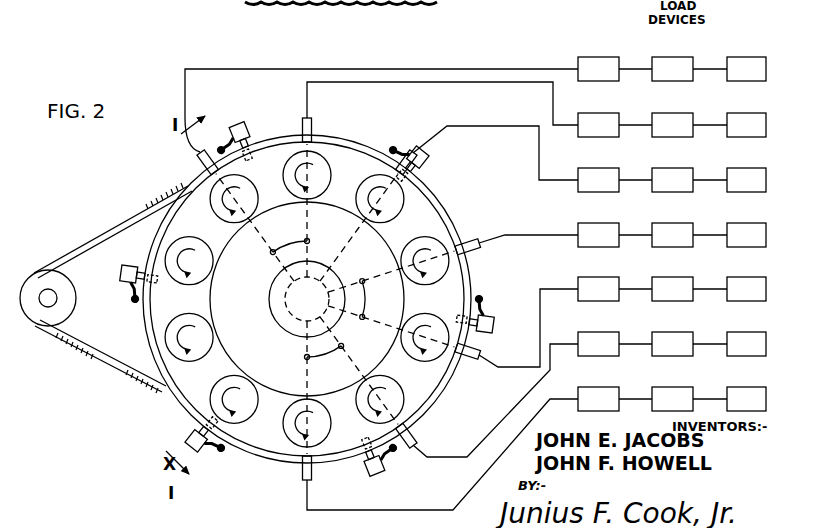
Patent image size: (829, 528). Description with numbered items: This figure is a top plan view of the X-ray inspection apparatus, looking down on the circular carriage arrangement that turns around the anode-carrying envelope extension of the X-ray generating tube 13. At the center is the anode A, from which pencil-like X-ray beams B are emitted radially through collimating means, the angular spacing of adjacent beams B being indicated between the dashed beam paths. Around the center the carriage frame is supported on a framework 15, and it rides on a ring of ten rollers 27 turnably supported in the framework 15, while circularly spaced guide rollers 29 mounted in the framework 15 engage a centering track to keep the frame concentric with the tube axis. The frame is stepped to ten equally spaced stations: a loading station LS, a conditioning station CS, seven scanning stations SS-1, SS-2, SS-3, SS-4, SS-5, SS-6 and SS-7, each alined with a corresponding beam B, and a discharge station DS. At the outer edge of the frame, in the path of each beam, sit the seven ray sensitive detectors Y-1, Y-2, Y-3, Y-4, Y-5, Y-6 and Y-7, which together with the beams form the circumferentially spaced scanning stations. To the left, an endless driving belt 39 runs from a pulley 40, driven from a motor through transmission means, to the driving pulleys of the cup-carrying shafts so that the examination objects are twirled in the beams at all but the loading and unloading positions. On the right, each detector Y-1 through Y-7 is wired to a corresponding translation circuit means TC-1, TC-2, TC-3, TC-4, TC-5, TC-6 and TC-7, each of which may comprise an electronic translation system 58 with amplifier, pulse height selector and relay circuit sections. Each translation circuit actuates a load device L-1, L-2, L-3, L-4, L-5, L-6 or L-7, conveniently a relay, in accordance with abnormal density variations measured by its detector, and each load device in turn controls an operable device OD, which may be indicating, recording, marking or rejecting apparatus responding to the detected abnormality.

The X-ray generating tube 13 is at (190, 3).
The framework 15 is at (240, 130).
The rollers 27 is at (254, 186).
The guide rollers 29 is at (220, 148).
The endless driving belt 39 is at (72, 339).
The pulley 40 is at (34, 308).
The electronic translation system 58 is at (606, 55).
The anode A is at (307, 299).
The X-ray beams B is at (329, 298).
The discharge station DS is at (170, 224).
The loading station LS is at (132, 357).
The conditioning station CS is at (198, 388).
The detector Y-1 is at (300, 478).
The detector Y-2 is at (413, 446).
The detector Y-3 is at (469, 360).
The detector Y-4 is at (482, 247).
The detector Y-5 is at (421, 165).
The detector Y-6 is at (307, 120).
The detector Y-7 is at (207, 165).
The scanning station SS-1 is at (325, 450).
The scanning station SS-2 is at (409, 404).
The scanning station SS-3 is at (445, 361).
The scanning station SS-4 is at (442, 228).
The scanning station SS-5 is at (370, 173).
The scanning station SS-6 is at (331, 155).
The scanning station SS-7 is at (206, 189).
The translation circuit means TC-1 is at (479, 448).
The translation circuit means TC-2 is at (532, 394).
The translation circuit means TC-3 is at (565, 322).
The translation circuit means TC-4 is at (565, 235).
The translation circuit means TC-5 is at (532, 159).
The translation circuit means TC-6 is at (479, 109).
The translation circuit means TC-7 is at (418, 104).
The load device L-1 is at (689, 399).
The load device L-2 is at (689, 344).
The load device L-3 is at (689, 289).
The load device L-4 is at (689, 235).
The load device L-5 is at (689, 180).
The load device L-6 is at (689, 125).
The load device L-7 is at (689, 69).
The operable devices OD is at (748, 212).